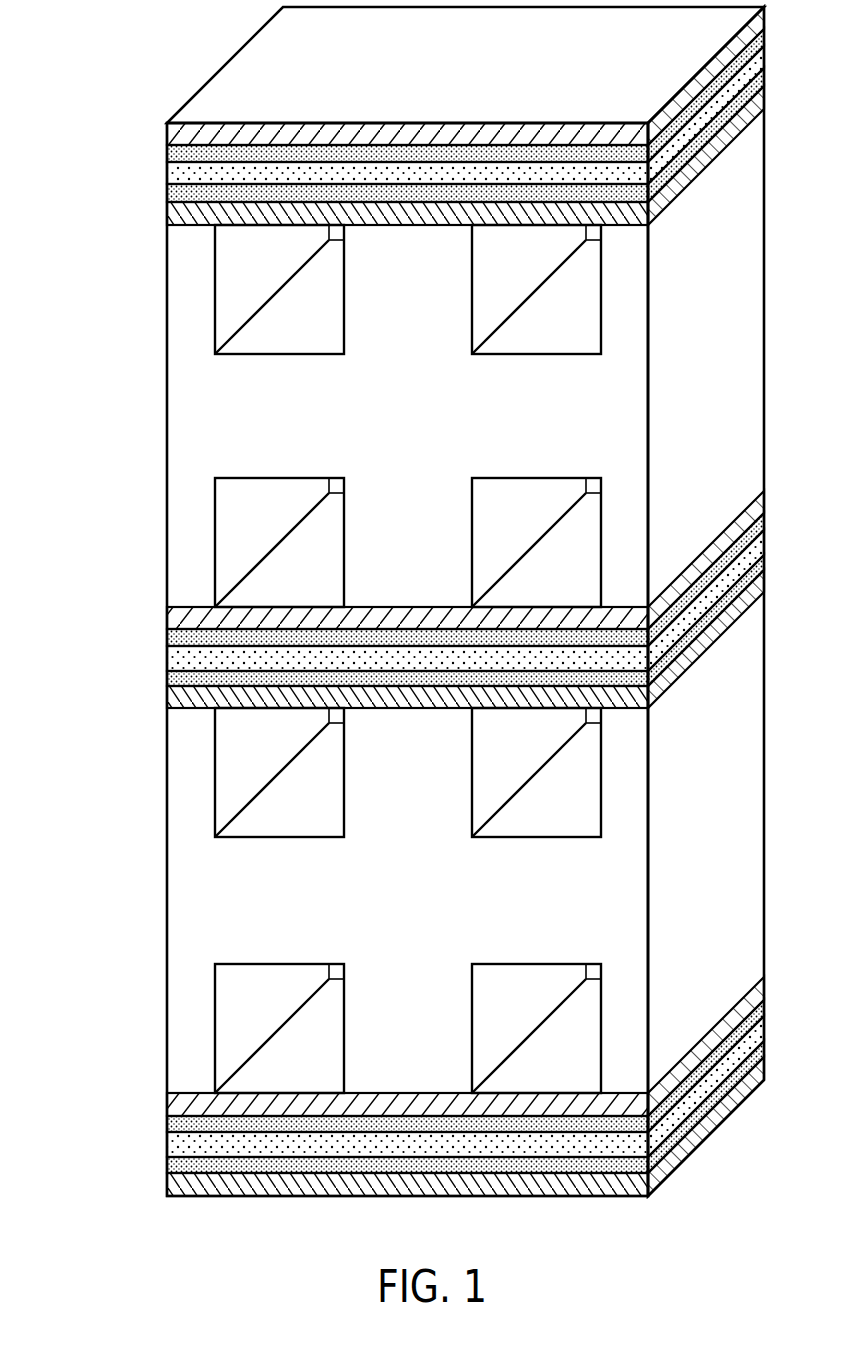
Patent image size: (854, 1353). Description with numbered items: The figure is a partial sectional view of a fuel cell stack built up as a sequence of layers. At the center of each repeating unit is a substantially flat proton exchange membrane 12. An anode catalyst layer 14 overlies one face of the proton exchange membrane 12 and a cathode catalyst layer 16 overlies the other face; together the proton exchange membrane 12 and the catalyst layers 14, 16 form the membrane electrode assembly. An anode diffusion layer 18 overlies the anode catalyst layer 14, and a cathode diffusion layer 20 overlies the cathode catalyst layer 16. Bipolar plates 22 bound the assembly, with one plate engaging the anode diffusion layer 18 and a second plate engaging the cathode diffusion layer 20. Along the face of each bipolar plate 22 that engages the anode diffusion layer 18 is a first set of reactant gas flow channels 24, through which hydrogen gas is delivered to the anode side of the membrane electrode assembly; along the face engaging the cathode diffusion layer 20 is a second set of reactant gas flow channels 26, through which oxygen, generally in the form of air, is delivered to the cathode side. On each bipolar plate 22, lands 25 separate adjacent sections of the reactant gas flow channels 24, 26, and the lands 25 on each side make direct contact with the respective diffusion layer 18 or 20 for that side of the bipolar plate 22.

The proton exchange membrane 12 is at (167, 655).
The anode catalyst layer 14 is at (167, 633).
The cathode catalyst layer 16 is at (167, 679).
The anode diffusion layer 18 is at (167, 617).
The cathode diffusion layer 20 is at (167, 697).
The bipolar plate 22 is at (167, 420).
The first set of reactant gas flow channels 24 is at (215, 533).
The lands 25 is at (388, 550).
The second set of reactant gas flow channels 26 is at (213, 757).